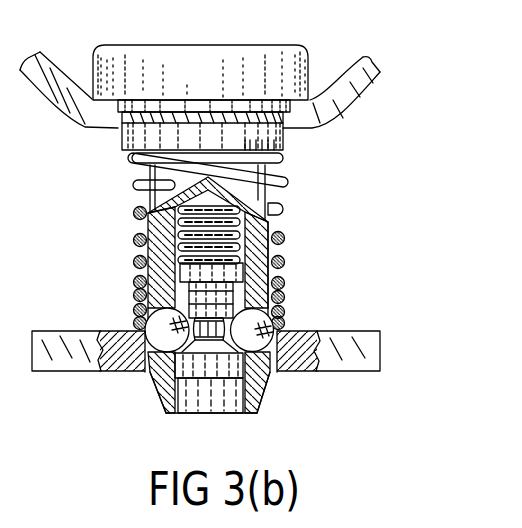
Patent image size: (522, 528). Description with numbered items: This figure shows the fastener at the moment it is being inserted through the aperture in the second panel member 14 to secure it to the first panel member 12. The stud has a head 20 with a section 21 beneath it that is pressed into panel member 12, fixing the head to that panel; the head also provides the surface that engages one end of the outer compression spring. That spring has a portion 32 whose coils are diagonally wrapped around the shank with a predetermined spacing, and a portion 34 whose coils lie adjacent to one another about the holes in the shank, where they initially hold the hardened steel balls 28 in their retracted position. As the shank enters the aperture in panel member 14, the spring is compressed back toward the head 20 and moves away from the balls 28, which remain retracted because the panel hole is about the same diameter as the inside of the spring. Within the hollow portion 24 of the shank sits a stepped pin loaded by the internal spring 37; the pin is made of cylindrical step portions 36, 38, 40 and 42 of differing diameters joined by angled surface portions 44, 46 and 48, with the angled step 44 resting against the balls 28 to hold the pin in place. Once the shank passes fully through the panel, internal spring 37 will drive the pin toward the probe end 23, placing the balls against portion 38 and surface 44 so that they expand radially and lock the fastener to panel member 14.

The panel member 12 is at (364, 97).
The panel member 14 is at (362, 333).
The head 20 is at (230, 45).
The section under head 21 is at (258, 115).
The probe end 23 is at (263, 396).
The hollow portion (aperture) 24 is at (237, 413).
The hardened steel balls 28 is at (155, 327).
The spring portion with diagonally wrapped coils 32 is at (284, 182).
The close-pattern spring portion 34 is at (279, 298).
The cylindrical step portion 36 is at (281, 267).
The internal spring 37 is at (274, 232).
The cylindrical step portion 38 is at (149, 275).
The cylindrical step portion 40 is at (153, 372).
The cylindrical step portion 42 is at (262, 375).
The angled step surface 44 is at (277, 289).
The angled step surface 46 is at (203, 299).
The angled step surface 48 is at (180, 362).